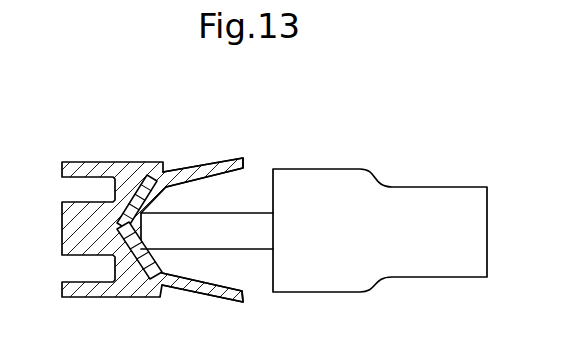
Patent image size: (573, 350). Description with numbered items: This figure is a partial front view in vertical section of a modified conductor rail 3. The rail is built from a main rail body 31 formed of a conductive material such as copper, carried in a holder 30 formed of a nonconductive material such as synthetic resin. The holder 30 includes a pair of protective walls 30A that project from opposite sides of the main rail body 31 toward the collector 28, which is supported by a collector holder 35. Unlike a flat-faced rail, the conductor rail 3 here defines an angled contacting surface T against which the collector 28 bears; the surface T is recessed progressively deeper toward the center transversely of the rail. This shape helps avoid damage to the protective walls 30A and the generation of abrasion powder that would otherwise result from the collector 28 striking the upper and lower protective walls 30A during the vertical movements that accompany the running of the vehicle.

The conductor rail 3 is at (70, 130).
The contacting surface T is at (158, 198).
The collector 28 is at (248, 220).
The holder 30 is at (122, 292).
The protective wall 30A is at (233, 160).
The main rail body 31 is at (158, 264).
The collector holder 35 is at (456, 197).